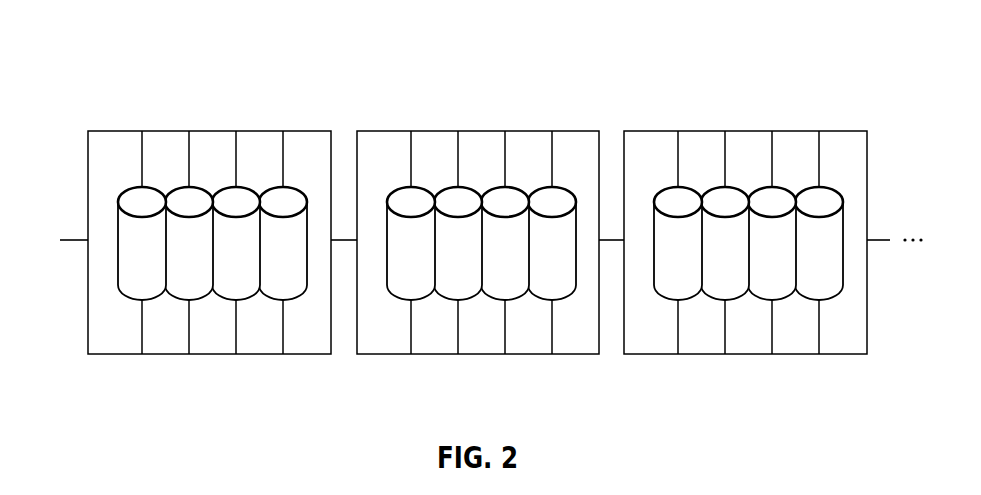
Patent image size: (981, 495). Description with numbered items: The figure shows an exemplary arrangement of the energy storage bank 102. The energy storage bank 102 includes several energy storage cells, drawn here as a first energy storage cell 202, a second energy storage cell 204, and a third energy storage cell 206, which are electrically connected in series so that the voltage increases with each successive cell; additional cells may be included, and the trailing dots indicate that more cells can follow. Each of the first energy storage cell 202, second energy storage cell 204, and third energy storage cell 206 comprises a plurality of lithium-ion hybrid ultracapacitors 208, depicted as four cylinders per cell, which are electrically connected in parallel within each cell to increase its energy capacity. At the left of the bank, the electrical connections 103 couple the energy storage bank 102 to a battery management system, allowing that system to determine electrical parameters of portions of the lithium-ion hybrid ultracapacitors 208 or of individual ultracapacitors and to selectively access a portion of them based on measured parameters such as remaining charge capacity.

The energy storage bank 102 is at (119, 62).
The electrical connections 103 is at (67, 239).
The first energy storage cell 202 is at (303, 131).
The second energy storage cell 204 is at (573, 131).
The third energy storage cell 206 is at (840, 131).
The lithium-ion hybrid ultracapacitors 208 is at (449, 266).